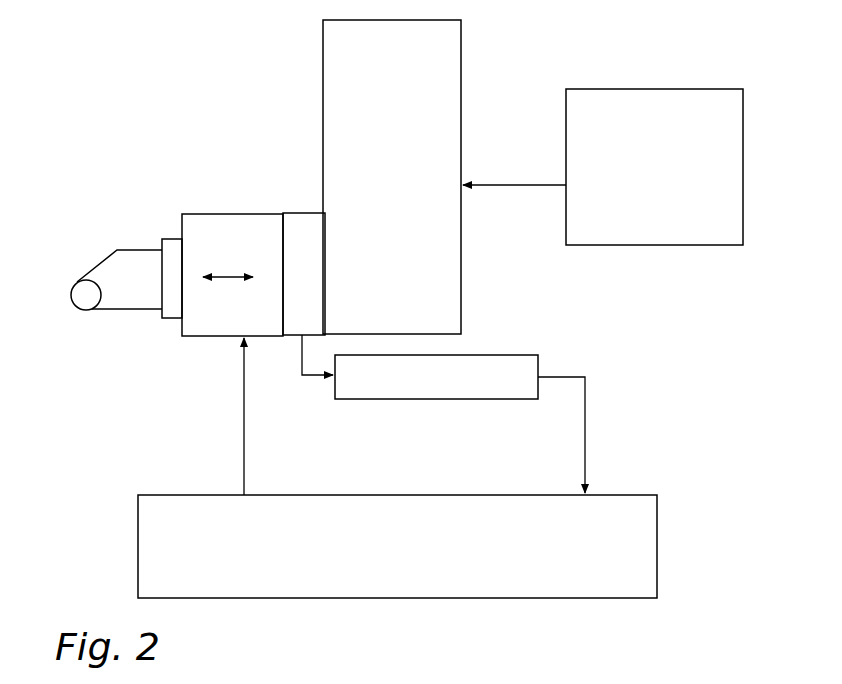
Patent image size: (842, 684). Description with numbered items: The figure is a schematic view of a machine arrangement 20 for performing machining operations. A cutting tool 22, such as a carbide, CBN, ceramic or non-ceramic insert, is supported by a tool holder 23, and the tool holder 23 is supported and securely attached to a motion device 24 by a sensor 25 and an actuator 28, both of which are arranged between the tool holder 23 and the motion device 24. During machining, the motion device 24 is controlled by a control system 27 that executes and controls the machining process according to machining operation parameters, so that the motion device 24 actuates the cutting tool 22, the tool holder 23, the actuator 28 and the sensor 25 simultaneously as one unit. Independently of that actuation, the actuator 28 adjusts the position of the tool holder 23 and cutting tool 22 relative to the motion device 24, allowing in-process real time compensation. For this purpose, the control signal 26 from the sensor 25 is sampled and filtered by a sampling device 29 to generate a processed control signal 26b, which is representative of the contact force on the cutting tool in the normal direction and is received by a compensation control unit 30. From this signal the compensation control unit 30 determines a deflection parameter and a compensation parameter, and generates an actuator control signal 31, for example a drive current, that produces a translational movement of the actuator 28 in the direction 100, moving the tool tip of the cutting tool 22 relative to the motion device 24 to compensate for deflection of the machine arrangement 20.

The machine arrangement 20 is at (155, 127).
The cutting tool 22 is at (80, 298).
The tool holder 23 is at (137, 258).
The motion device 24 is at (452, 248).
The sensor 25 is at (302, 232).
The control signal 26 is at (302, 362).
The processed control signal 26b is at (587, 446).
The control system 27 is at (653, 233).
The actuator 28 is at (232, 247).
The sampling device 29 is at (526, 358).
The compensation control unit 30 is at (425, 508).
The actuator control signal 31 is at (243, 427).
The direction 100 is at (228, 298).